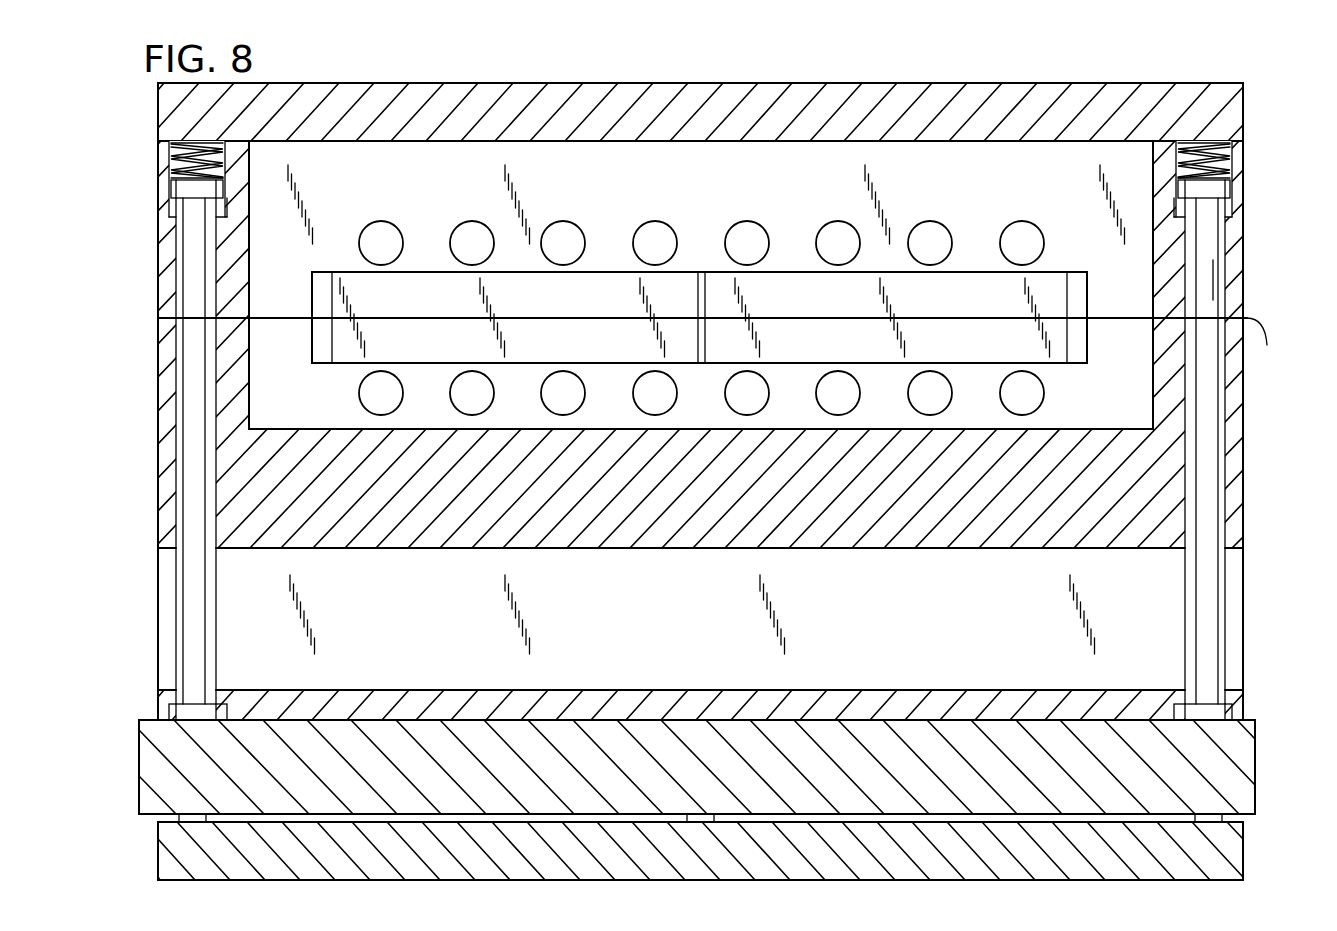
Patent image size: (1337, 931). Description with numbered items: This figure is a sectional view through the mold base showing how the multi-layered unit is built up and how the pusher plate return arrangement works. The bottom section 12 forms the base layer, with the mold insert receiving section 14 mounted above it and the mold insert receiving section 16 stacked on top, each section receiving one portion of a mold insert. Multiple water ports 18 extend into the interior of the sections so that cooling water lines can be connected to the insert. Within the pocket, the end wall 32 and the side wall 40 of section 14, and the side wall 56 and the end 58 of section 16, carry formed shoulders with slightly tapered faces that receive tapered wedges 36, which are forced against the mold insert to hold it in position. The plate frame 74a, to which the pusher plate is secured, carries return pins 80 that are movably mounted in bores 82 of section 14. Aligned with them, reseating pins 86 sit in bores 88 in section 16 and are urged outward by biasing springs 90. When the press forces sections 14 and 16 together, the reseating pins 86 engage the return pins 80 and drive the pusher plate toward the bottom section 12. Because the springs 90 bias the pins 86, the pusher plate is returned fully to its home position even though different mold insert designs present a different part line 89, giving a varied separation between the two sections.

The bottom section 12 is at (158, 598).
The mold insert receiving section 14 is at (158, 414).
The mold insert receiving section 16 is at (158, 242).
The water ports 18 is at (472, 243).
The end wall 32 is at (174, 314).
The tapered wedge 36 is at (612, 283).
The side wall 40 is at (318, 350).
The side wall 56 is at (318, 284).
The end 58 is at (160, 321).
The plate frame 74a is at (548, 732).
The return pins 80 is at (205, 622).
The bores 82 is at (182, 433).
The reseating pins 86 is at (192, 270).
The bores 88 is at (1214, 267).
The part line 89 is at (1265, 347).
The biasing springs 90 is at (172, 166).